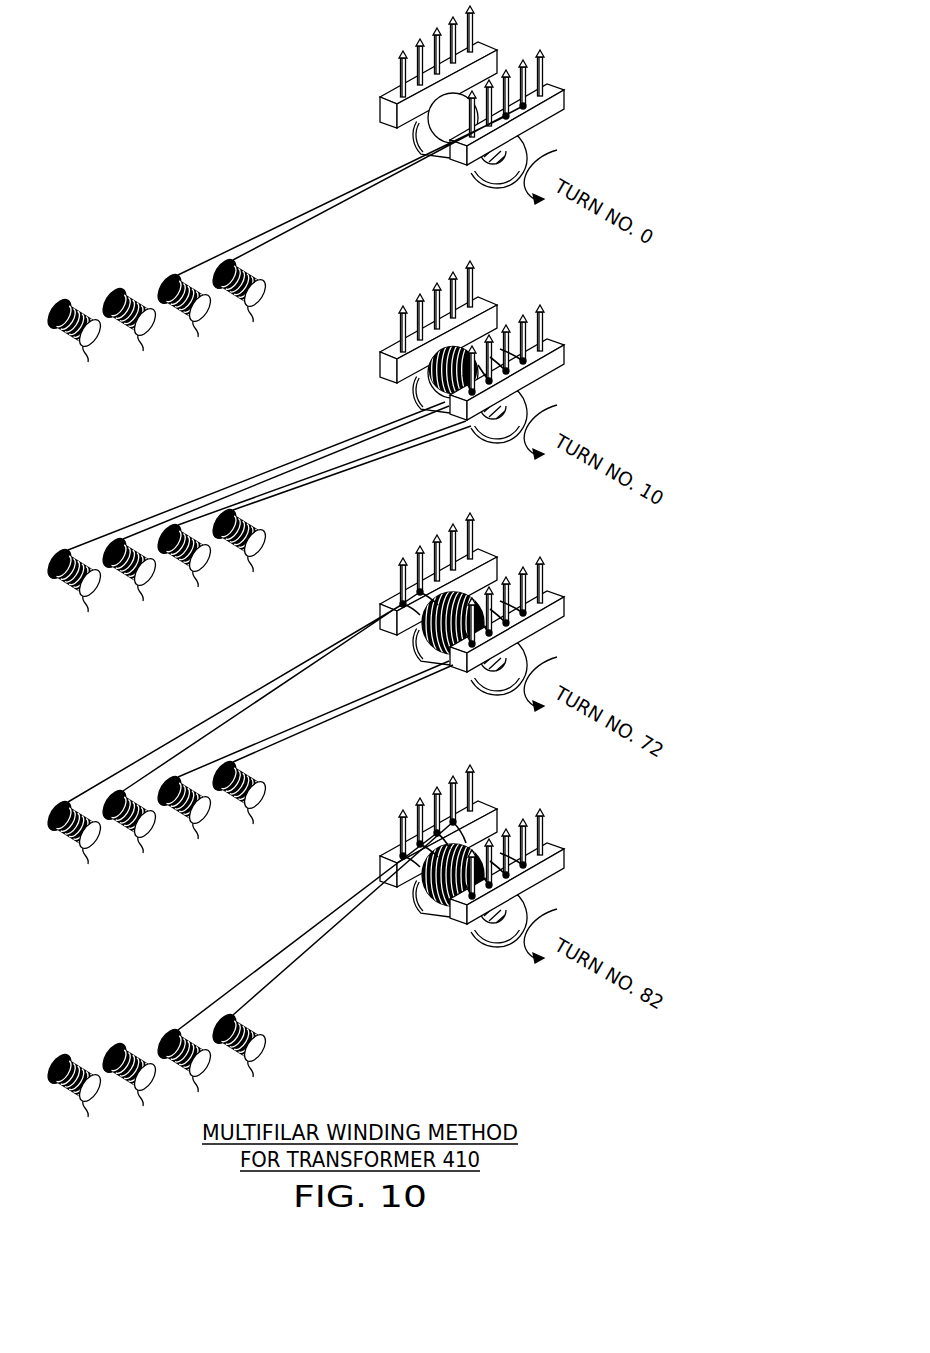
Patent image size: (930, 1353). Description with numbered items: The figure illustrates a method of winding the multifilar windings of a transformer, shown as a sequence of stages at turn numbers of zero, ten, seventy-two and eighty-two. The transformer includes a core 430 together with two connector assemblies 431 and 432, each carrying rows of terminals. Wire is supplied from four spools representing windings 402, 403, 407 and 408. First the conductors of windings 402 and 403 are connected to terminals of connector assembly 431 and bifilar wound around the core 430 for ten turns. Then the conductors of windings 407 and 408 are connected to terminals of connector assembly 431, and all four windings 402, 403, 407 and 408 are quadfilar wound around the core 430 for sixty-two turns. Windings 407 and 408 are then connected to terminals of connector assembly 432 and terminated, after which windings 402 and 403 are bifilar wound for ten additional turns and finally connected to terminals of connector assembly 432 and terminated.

The core 430 is at (490, 188).
The connector assembly 431 is at (547, 87).
The connector assembly 432 is at (482, 47).
The winding 402 is at (186, 691).
The winding 403 is at (242, 676).
The winding 407 is at (76, 718).
The winding 408 is at (132, 705).